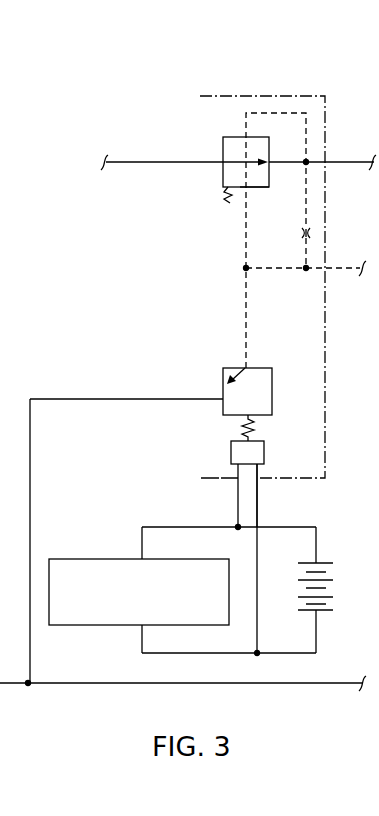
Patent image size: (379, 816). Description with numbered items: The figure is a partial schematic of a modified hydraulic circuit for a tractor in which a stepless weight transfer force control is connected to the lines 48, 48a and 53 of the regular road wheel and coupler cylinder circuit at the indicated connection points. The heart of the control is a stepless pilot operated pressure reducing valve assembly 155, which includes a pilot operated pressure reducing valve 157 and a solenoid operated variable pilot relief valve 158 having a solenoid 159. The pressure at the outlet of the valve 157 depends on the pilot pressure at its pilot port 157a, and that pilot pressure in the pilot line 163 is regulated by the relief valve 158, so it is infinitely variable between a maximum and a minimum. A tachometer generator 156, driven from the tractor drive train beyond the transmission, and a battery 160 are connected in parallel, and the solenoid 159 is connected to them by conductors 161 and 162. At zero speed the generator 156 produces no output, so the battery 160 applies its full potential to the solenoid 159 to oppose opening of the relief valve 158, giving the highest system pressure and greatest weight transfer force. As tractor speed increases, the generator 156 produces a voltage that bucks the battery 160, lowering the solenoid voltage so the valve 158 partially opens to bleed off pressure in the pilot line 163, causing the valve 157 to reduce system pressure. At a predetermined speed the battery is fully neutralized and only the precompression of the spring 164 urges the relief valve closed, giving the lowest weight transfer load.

The pilot operated pressure reducing valve assembly 155 is at (218, 90).
The pilot operated pressure reducing valve 157 is at (268, 130).
The pilot port 157a is at (258, 188).
The spring 164 is at (222, 205).
The line 48 is at (150, 160).
The line 48a is at (345, 160).
The pilot line 163 is at (248, 311).
The solenoid operated variable pilot relief valve 158 is at (282, 389).
The solenoid 159 is at (264, 452).
The conductor 161 is at (238, 500).
The conductor 162 is at (258, 505).
The tachometer generator 156 is at (105, 559).
The battery 160 is at (333, 588).
The line 53 is at (2, 690).